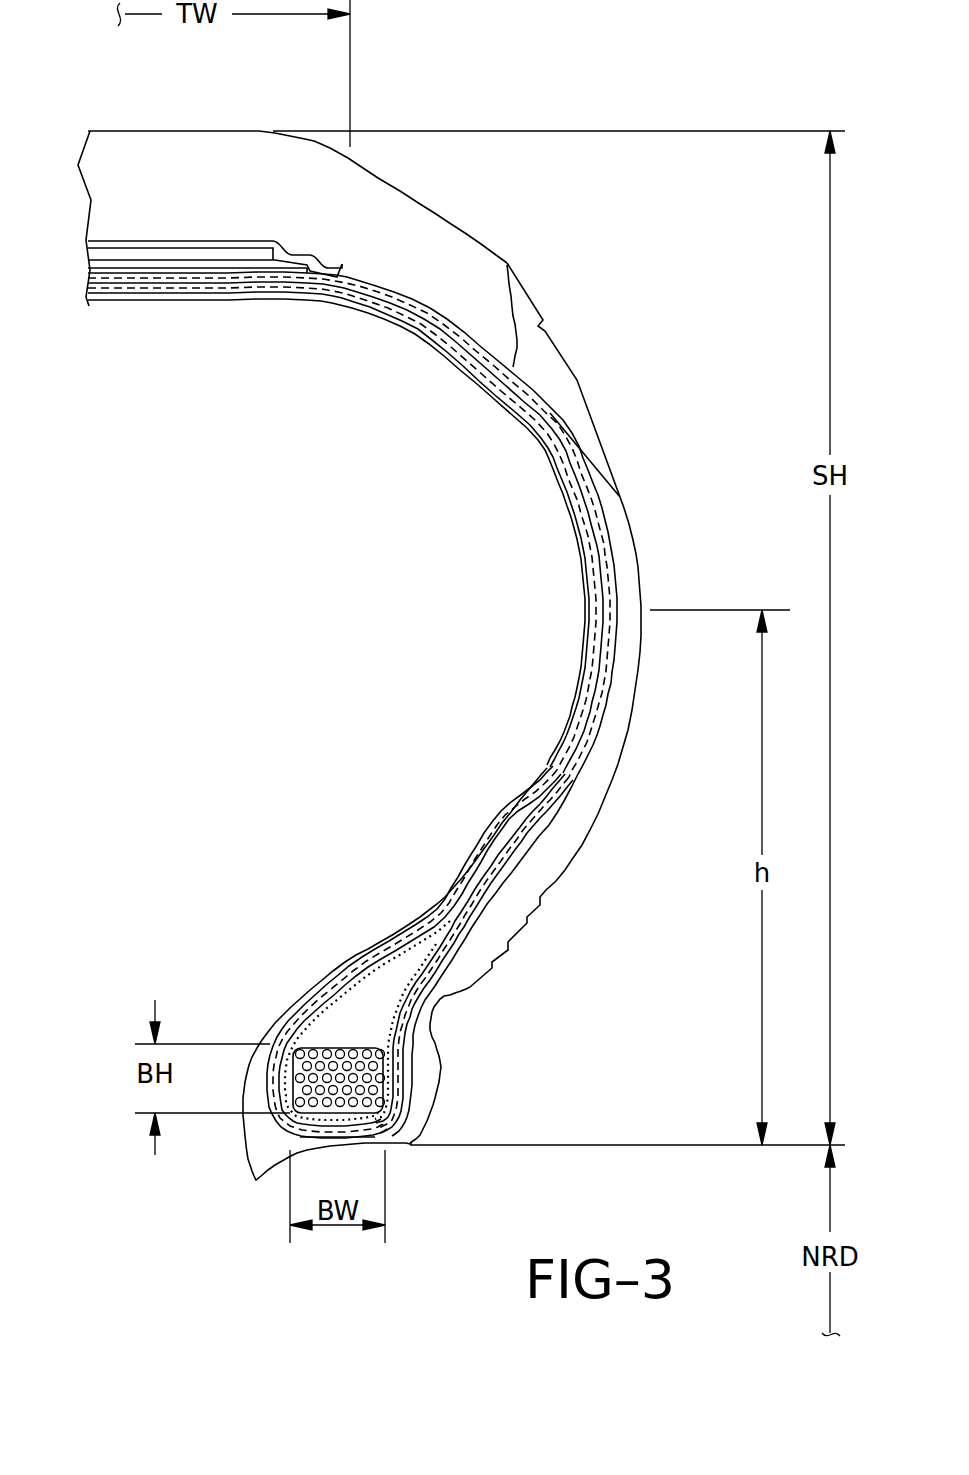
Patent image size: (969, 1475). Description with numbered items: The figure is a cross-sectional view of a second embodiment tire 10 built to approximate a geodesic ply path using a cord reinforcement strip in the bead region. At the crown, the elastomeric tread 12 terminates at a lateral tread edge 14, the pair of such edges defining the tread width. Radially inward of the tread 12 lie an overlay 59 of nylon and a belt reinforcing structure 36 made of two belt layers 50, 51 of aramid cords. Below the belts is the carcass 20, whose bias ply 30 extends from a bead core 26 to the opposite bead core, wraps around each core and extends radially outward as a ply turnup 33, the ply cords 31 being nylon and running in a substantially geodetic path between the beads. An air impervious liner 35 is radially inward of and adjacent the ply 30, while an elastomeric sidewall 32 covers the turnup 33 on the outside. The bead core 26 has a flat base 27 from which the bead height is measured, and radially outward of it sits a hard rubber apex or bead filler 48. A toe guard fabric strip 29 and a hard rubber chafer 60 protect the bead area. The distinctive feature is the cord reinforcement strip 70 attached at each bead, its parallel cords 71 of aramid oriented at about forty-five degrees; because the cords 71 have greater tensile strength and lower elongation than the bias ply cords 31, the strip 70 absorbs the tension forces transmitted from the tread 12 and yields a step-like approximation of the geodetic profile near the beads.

The tire 10 is at (615, 290).
The tread 12 is at (112, 130).
The lateral tread edge 14 is at (373, 151).
The carcass 20 is at (637, 571).
The bead core 26 is at (340, 1080).
The flat base 27 is at (360, 1113).
The toe guard fabric strip 29 is at (393, 1103).
The ply 30 is at (115, 302).
The ply cord 31 is at (573, 742).
The elastomeric sidewall 32 is at (622, 678).
The ply turnup 33 is at (212, 272).
The air impervious liner 35 is at (460, 875).
The belt reinforcing structure 36 is at (120, 232).
The apex 48 is at (380, 980).
The belt layer 50 is at (255, 257).
The belt layer 51 is at (281, 268).
The overlay 59 is at (174, 236).
The hard rubber chafer 60 is at (425, 1058).
The cord reinforcement strip 70 is at (405, 935).
The reinforcement strip cord 71 is at (385, 951).